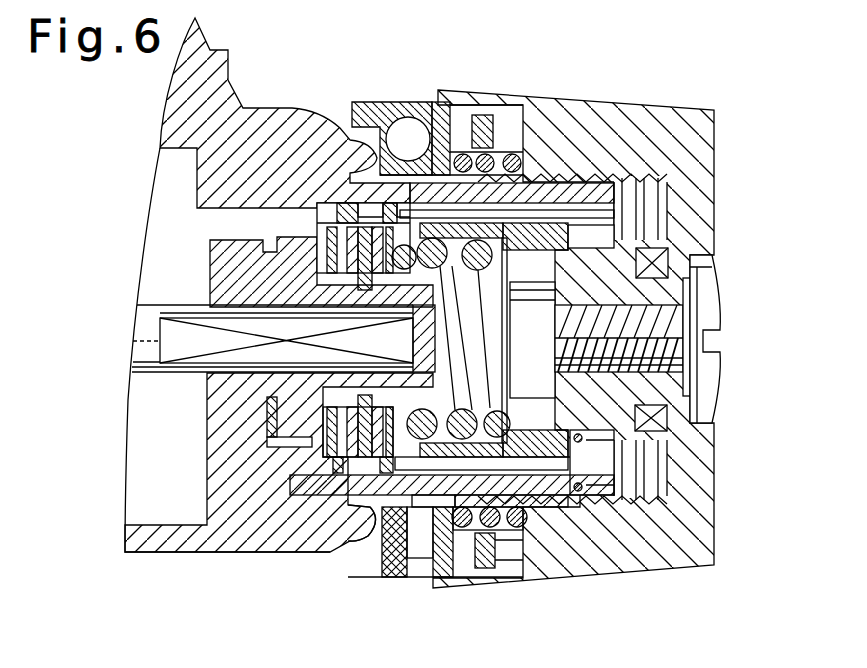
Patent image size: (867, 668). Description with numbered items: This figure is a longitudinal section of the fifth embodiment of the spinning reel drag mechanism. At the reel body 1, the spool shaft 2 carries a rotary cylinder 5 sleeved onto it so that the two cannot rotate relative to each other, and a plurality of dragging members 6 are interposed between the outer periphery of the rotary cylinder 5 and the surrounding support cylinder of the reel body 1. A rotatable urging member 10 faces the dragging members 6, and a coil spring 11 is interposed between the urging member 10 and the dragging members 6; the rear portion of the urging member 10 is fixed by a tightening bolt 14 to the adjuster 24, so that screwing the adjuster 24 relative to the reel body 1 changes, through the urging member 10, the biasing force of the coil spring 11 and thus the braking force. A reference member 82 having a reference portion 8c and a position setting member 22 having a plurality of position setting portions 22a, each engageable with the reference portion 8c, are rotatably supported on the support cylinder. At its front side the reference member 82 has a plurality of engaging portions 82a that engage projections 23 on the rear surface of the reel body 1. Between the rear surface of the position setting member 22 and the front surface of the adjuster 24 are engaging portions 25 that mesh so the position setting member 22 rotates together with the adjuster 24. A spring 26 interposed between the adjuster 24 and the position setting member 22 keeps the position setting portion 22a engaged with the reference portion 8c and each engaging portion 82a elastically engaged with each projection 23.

The reel body 1 is at (259, 95).
The spool shaft 2 is at (152, 360).
The rotary cylinder 5 is at (287, 453).
The dragging members 6 is at (397, 413).
The reference portion 8c is at (413, 132).
The urging member 10 is at (682, 285).
The coil spring 11 is at (477, 272).
The tightening bolt 14 is at (705, 377).
The position setting member 22 is at (423, 572).
The position setting portions 22a is at (432, 120).
The projections 23 is at (350, 527).
The adjuster 24 is at (680, 117).
The engaging portions 25 is at (483, 572).
The spring 26 is at (508, 157).
The reference member 82 is at (383, 567).
The engaging portions 82a is at (385, 545).